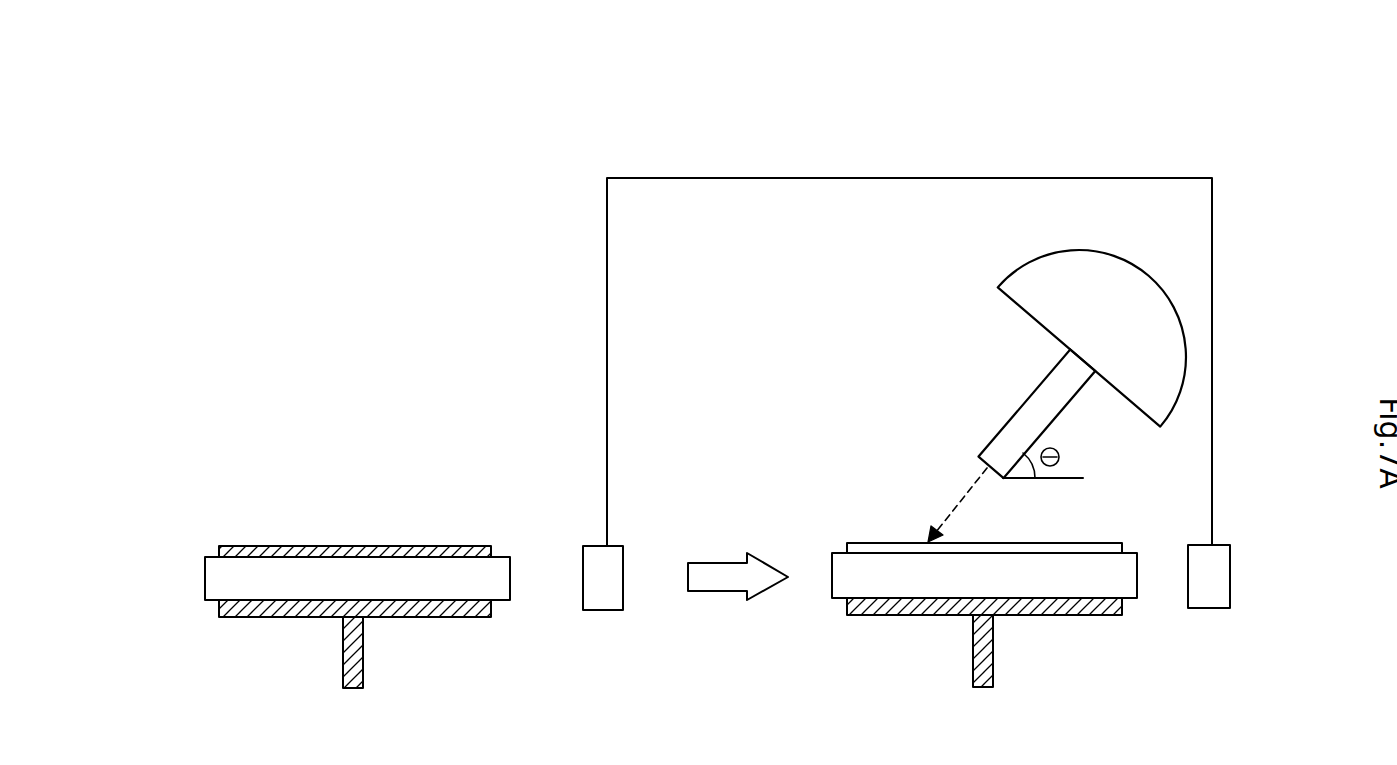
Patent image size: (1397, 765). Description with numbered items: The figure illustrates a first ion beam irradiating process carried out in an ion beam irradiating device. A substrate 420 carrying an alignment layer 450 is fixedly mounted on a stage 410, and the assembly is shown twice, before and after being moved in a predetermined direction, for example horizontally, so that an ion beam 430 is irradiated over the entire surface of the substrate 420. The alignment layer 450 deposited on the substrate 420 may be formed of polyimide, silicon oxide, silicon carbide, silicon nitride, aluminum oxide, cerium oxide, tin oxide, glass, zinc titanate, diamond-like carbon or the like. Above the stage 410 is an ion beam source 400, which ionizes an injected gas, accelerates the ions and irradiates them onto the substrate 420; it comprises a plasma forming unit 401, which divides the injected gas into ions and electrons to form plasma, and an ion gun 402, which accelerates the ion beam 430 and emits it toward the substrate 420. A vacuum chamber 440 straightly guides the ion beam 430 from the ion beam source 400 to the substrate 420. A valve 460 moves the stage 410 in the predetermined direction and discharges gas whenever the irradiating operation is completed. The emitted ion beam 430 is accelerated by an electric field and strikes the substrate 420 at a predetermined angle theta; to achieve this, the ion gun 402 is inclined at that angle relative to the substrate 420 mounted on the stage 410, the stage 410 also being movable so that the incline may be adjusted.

The ion beam source 400 is at (1103, 245).
The plasma forming unit 401 is at (1110, 250).
The ion gun 402 is at (1020, 400).
The stage 410 is at (363, 650).
The substrate 420 is at (204, 574).
The ion beam 430 is at (963, 497).
The vacuum chamber 440 is at (715, 178).
The alignment layer 450 is at (358, 545).
The valve 460 is at (600, 610).